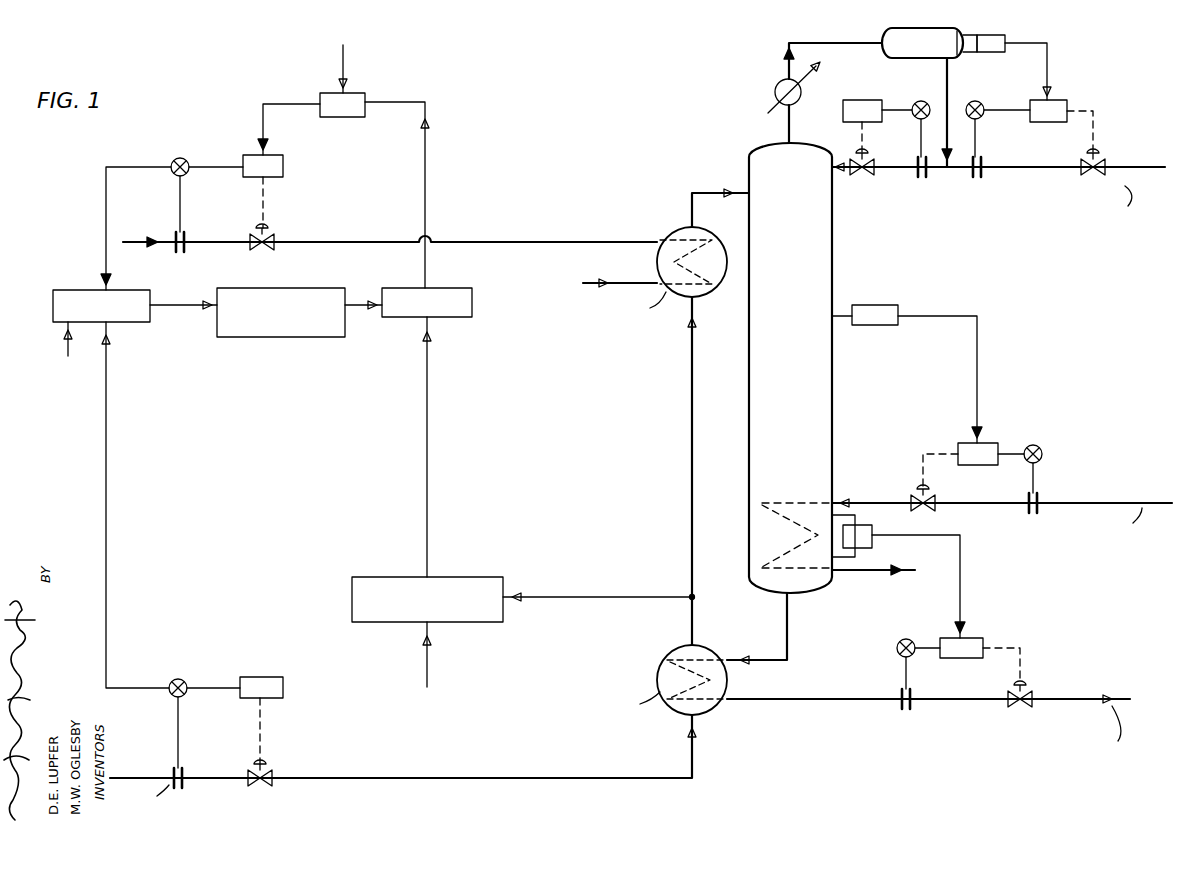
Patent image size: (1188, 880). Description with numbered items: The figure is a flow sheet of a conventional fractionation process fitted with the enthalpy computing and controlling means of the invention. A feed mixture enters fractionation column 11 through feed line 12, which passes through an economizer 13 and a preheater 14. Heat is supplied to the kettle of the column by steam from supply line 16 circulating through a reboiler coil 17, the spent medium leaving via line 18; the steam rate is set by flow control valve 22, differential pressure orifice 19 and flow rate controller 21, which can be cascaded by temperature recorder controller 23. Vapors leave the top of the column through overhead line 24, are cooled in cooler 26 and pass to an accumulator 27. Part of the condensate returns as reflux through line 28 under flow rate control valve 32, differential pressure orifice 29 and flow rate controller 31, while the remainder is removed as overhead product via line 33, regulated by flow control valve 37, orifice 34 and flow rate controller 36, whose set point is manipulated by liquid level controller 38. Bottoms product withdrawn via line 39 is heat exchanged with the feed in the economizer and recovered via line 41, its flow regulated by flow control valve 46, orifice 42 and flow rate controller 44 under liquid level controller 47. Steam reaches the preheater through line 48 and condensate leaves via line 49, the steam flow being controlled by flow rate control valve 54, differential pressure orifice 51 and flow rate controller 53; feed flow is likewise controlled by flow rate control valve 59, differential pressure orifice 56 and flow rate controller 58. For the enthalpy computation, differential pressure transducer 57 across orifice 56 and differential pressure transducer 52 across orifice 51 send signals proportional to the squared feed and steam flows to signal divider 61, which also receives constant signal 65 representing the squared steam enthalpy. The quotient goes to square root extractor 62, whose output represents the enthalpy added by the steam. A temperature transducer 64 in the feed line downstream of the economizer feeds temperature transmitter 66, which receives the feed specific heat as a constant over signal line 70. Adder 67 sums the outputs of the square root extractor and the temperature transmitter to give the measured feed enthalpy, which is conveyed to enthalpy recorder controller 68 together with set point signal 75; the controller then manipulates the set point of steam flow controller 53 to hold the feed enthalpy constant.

The fractionation column 11 is at (751, 170).
The feed line 12 is at (345, 781).
The economizer 13 is at (706, 716).
The preheater 14 is at (659, 266).
The supply line 16 is at (1170, 501).
The reboiler coil 17 is at (799, 502).
The line 18 is at (908, 572).
The differential pressure orifice 19 is at (1026, 498).
The flow rate controller 21 is at (962, 443).
The flow control valve 22 is at (920, 485).
The temperature recorder controller 23 is at (874, 326).
The overhead line 24 is at (786, 136).
The cooler 26 is at (779, 80).
The accumulator 27 is at (895, 57).
The line 28 is at (926, 177).
The differential pressure orifice 29 is at (917, 176).
The flow rate controller 31 is at (856, 100).
The flow rate control valve 32 is at (861, 176).
The line 33 is at (1142, 167).
The orifice 34 is at (985, 161).
The flow rate controller 36 is at (1031, 100).
The flow control valve 37 is at (1088, 160).
The liquid level controller 38 is at (1000, 62).
The line 39 is at (787, 665).
The line 41 is at (790, 701).
The orifice 42 is at (900, 706).
The flow rate controller 44 is at (983, 638).
The flow control valve 46 is at (1012, 704).
The liquid level controller 47 is at (873, 546).
The line 48 is at (400, 246).
The line 49 is at (592, 284).
The differential pressure orifice 51 is at (187, 250).
The differential pressure transducer 52 is at (184, 174).
The flow rate controller 53 is at (280, 172).
The flow rate control valve 54 is at (262, 250).
The differential pressure orifice 56 is at (183, 785).
The differential pressure transducer 57 is at (181, 679).
The flow rate controller 58 is at (277, 677).
The flow rate control valve 59 is at (264, 786).
The signal divider 61 is at (135, 325).
The square root extractor 62 is at (309, 338).
The temperature transducer 64 is at (697, 599).
The signal 65 is at (68, 346).
The temperature transmitter 66 is at (505, 612).
The adder 67 is at (410, 322).
The enthalpy recorder controller 68 is at (320, 98).
The signal line 70 is at (430, 661).
The set point signal 75 is at (346, 86).